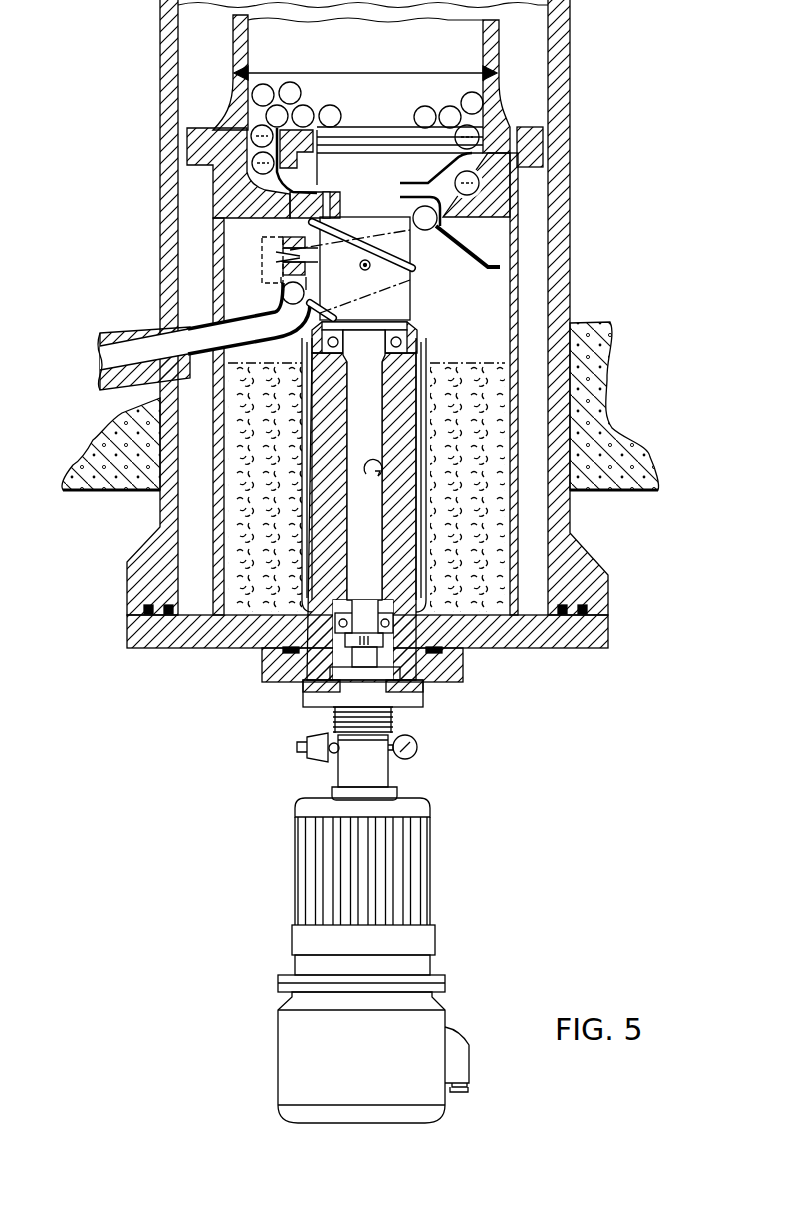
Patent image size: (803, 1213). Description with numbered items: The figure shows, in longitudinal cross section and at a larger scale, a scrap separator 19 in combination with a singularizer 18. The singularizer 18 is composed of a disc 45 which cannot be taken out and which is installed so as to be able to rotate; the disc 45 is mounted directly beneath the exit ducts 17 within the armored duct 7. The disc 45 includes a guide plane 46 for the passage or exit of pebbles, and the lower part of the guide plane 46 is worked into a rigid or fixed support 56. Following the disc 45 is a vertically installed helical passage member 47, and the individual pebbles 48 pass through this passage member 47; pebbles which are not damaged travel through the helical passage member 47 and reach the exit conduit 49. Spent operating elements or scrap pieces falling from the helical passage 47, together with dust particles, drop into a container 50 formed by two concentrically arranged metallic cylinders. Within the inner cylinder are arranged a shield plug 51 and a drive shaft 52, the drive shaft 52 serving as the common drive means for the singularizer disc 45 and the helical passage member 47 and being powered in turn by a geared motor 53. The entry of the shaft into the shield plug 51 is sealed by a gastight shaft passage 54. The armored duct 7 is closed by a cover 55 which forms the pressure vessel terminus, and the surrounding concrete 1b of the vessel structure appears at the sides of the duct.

The armored duct 7 is at (170, 42).
The exit ducts 17 is at (470, 58).
The singularizer 18 is at (650, 205).
The scrap separator 19 is at (417, 290).
The concrete foundation 1b is at (623, 477).
The disc 45 is at (470, 170).
The guide plane 46 is at (500, 178).
The helical passage member 47 is at (443, 230).
The pebbles 48 is at (262, 125).
The exit conduit 49 is at (123, 345).
The container 50 is at (427, 457).
The shield plug 51 is at (397, 505).
The drive shaft 52 is at (370, 563).
The geared motor 53 is at (400, 868).
The gastight shaft passage 54 is at (375, 775).
The cover 55 is at (557, 633).
The rigid support 56 is at (240, 200).